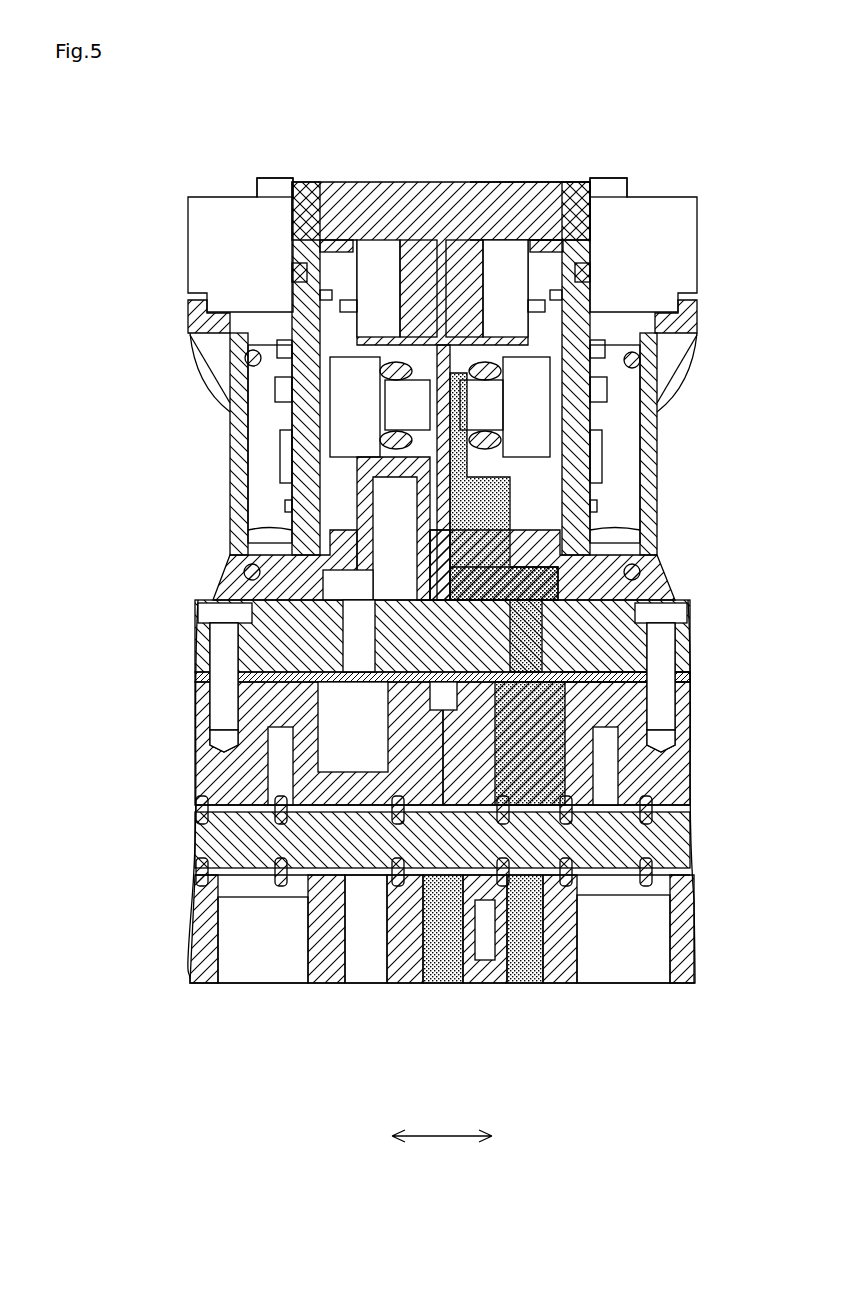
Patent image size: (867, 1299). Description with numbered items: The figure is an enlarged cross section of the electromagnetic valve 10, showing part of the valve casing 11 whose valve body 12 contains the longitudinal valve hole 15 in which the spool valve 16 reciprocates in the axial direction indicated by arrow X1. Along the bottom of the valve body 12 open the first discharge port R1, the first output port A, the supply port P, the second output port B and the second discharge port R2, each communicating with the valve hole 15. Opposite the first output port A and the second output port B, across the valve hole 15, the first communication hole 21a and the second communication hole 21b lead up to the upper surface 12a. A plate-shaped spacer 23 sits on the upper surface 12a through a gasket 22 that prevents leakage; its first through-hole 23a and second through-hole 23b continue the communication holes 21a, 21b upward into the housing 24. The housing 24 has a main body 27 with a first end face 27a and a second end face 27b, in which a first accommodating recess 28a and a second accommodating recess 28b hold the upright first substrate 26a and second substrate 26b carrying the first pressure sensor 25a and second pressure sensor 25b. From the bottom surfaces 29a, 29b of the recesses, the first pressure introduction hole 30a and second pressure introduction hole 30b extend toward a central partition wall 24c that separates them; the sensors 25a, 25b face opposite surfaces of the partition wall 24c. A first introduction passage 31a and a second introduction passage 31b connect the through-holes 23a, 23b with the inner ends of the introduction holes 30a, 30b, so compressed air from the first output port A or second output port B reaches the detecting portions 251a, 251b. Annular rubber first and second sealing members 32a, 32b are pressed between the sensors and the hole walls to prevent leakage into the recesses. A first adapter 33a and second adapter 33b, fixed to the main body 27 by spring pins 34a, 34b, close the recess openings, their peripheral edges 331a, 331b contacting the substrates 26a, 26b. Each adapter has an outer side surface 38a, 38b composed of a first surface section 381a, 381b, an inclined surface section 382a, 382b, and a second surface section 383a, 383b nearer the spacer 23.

The electromagnetic valve 10 is at (119, 131).
The valve casing 11 is at (200, 985).
The valve body 12 is at (688, 985).
The upper surface 12a is at (680, 678).
The valve hole 15 is at (322, 885).
The spool valve 16 is at (200, 846).
The first communication hole 21a is at (560, 712).
The second communication hole 21b is at (330, 695).
The gasket 22 is at (215, 676).
The spacer 23 is at (200, 628).
The first through-hole 23a is at (668, 630).
The second through-hole 23b is at (360, 612).
The housing 24 is at (312, 182).
The partition wall 24c is at (446, 488).
The first pressure sensor 25a is at (590, 450).
The second pressure sensor 25b is at (300, 450).
The first substrate 26a is at (650, 433).
The second substrate 26b is at (240, 433).
The main body 27 is at (555, 195).
The first end face 27a is at (596, 186).
The second end face 27b is at (292, 190).
The first accommodating recess 28a is at (562, 246).
The second accommodating recess 28b is at (322, 244).
The bottom surface 29a is at (600, 480).
The bottom surface 29b is at (285, 480).
The first pressure introduction hole 30a is at (488, 362).
The second pressure introduction hole 30b is at (393, 362).
The first introduction passage 31a is at (560, 512).
The second introduction passage 31b is at (330, 512).
The first sealing member 32a is at (503, 432).
The second sealing member 32b is at (372, 432).
The first adapter 33a is at (697, 195).
The second adapter 33b is at (190, 197).
The peripheral edge 331a is at (625, 543).
The peripheral edge 331b is at (262, 543).
The spring pin 34a is at (632, 352).
The spring pin 34b is at (253, 350).
The outer side surface 38a is at (786, 314).
The outer side surface 38b is at (101, 314).
The first surface section 381a is at (690, 315).
The first surface section 381b is at (190, 315).
The inclined surface section 382a is at (685, 360).
The inclined surface section 382b is at (200, 360).
The second surface section 383a is at (685, 395).
The second surface section 383b is at (200, 395).
The detecting portion 251a is at (470, 300).
The detecting portion 251b is at (412, 300).
The first output port A is at (520, 983).
The second output port B is at (365, 983).
The supply port P is at (445, 983).
The first discharge port R1 is at (610, 983).
The second discharge port R2 is at (255, 983).
The arrow indicating movement direction X1 is at (442, 1142).